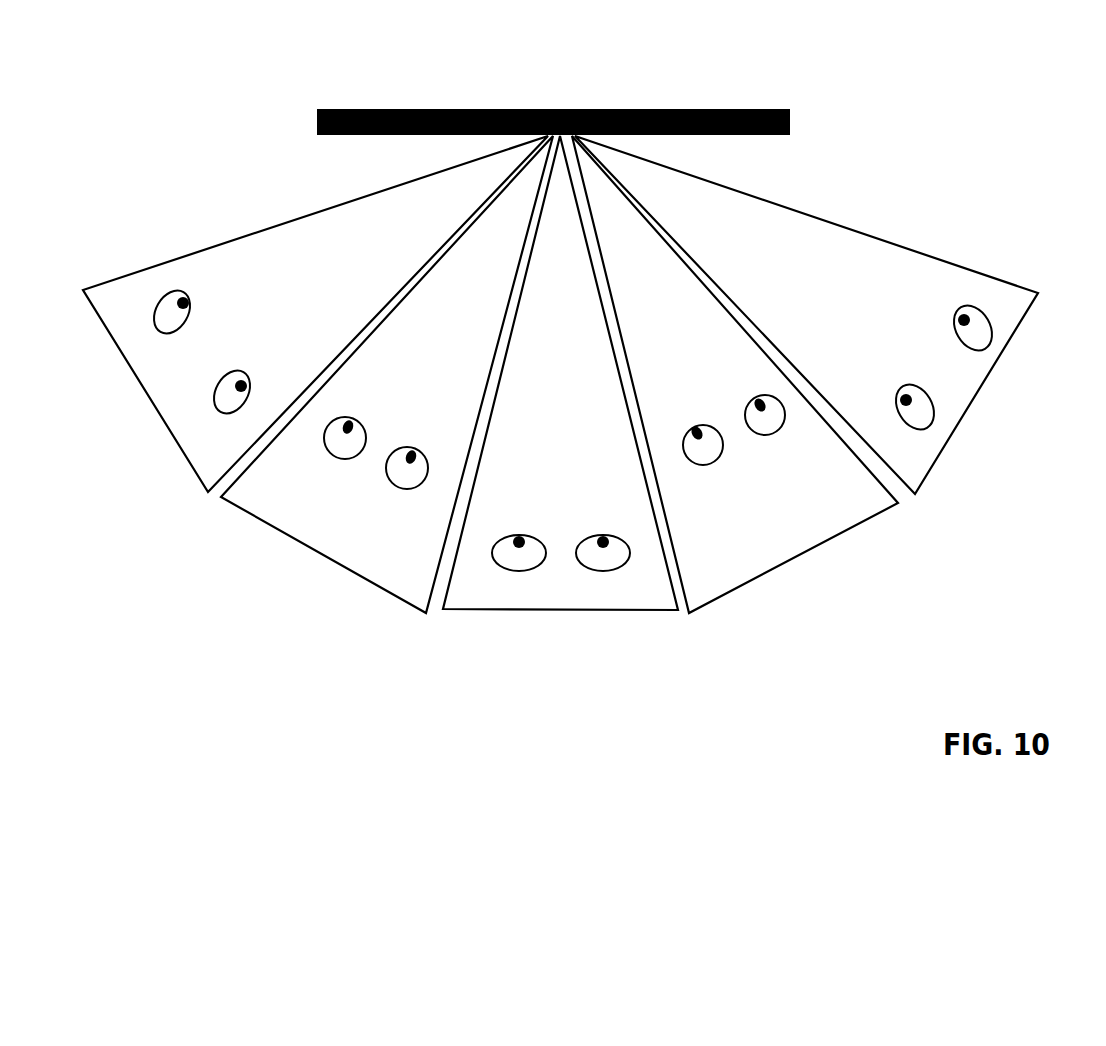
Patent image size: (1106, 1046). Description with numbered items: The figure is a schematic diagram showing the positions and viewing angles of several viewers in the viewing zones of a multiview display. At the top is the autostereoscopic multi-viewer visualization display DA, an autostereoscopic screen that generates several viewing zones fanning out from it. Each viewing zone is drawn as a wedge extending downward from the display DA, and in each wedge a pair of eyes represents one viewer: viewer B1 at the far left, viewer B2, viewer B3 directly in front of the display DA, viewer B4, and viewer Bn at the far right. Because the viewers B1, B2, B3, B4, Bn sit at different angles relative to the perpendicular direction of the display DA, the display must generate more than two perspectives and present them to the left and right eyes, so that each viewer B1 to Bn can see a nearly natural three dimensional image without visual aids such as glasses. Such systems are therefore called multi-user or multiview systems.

The autostereoscopic multi-viewer visualization display DA is at (553, 105).
The viewer B1 is at (315, 314).
The viewer B2 is at (387, 390).
The viewer B3 is at (560, 419).
The viewer B4 is at (735, 390).
The viewer Bn is at (822, 315).